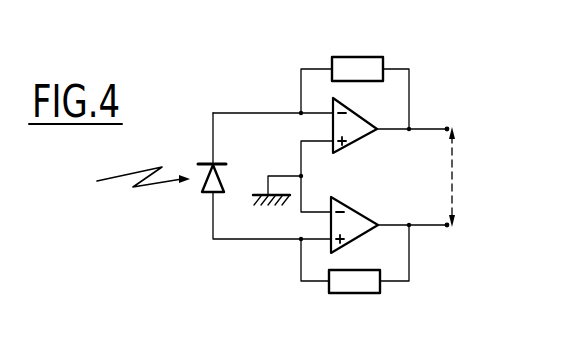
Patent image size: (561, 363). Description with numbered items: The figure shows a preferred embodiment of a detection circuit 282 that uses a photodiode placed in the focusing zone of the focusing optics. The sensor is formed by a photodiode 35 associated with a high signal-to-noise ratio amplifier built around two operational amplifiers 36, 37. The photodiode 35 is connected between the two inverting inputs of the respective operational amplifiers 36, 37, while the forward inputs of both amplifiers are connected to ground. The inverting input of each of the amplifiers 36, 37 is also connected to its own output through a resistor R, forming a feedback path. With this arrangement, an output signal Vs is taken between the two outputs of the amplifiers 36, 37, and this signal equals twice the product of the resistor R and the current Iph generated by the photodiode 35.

The detection circuit 282 is at (215, 77).
The photodiode 35 is at (202, 184).
The operational amplifier 36 is at (362, 130).
The operational amplifier 37 is at (366, 216).